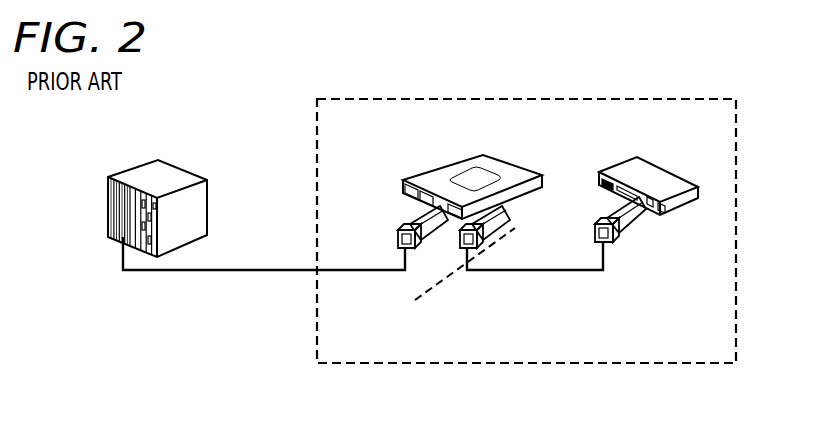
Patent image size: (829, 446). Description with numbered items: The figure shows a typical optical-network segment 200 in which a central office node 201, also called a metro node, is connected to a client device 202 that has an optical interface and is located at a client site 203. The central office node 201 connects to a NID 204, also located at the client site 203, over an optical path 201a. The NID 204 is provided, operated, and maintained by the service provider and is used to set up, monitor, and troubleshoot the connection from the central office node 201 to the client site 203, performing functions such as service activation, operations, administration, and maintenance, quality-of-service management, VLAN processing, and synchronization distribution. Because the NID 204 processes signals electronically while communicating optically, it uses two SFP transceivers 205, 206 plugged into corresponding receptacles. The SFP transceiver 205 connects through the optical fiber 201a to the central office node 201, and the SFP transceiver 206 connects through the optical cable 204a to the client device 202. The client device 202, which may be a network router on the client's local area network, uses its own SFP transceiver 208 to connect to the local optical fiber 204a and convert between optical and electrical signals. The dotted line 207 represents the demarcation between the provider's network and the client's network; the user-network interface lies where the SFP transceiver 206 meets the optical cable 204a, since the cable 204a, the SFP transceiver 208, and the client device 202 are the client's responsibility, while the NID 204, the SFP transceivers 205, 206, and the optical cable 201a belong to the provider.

The optical-network segment 200 is at (88, 125).
The central office node 201 is at (172, 175).
The optical path 201a is at (233, 271).
The client device 202 is at (650, 175).
The client site 203 is at (660, 99).
The NID 204 is at (440, 173).
The optical cable 204a is at (565, 272).
The SFP transceiver 205 is at (410, 221).
The SFP transceiver 206 is at (512, 218).
The dotted line 207 is at (428, 288).
The SFP transceiver 208 is at (627, 223).